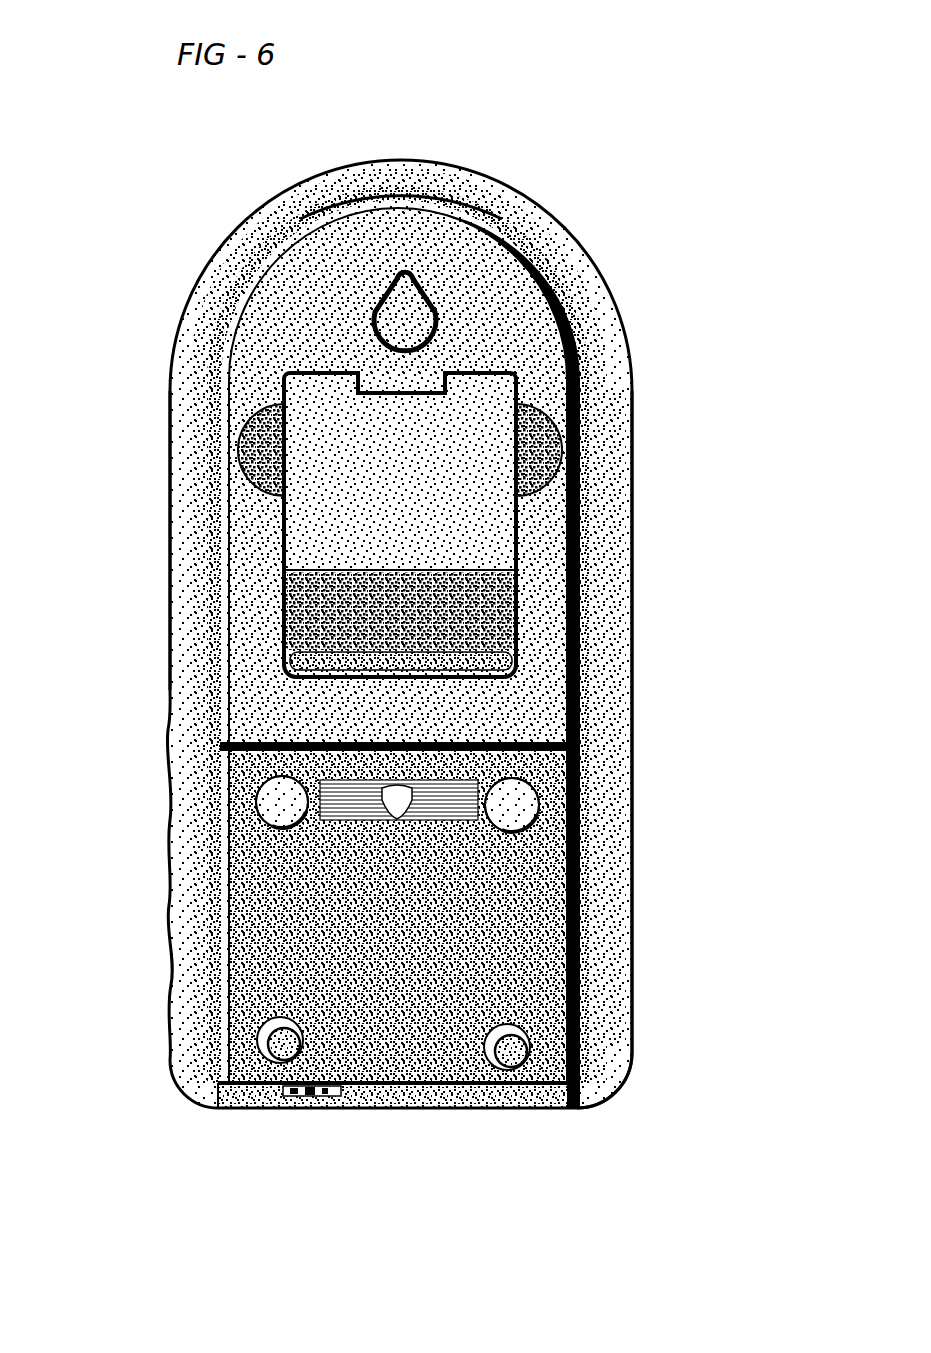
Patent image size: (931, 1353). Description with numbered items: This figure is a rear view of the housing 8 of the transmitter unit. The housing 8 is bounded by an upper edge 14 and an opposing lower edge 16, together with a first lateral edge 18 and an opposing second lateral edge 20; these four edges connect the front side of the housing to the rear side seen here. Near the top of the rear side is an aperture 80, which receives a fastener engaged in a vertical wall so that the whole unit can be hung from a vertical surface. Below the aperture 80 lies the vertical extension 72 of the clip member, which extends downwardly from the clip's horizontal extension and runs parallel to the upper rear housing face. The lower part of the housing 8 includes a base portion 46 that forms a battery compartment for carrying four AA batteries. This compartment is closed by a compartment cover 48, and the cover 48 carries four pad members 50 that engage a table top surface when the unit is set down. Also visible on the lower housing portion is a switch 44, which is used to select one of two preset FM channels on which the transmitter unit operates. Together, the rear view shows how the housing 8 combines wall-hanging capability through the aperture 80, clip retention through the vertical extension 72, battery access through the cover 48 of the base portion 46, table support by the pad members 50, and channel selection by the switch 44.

The housing 8 is at (644, 978).
The upper edge 14 is at (390, 158).
The lower edge 16 is at (418, 1110).
The first lateral edge 18 is at (633, 475).
The second lateral edge 20 is at (158, 497).
The switch 44 is at (323, 1108).
The base portion 46 is at (578, 1070).
The compartment cover 48 is at (260, 938).
The pad members 50 is at (270, 800).
The vertical extension 72 is at (487, 545).
The aperture 80 is at (418, 278).